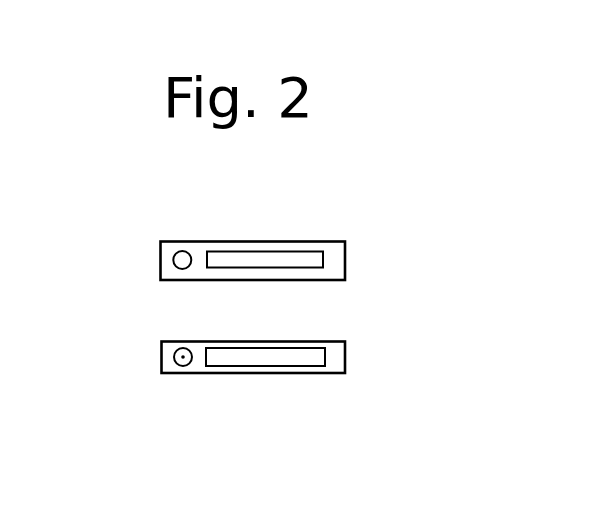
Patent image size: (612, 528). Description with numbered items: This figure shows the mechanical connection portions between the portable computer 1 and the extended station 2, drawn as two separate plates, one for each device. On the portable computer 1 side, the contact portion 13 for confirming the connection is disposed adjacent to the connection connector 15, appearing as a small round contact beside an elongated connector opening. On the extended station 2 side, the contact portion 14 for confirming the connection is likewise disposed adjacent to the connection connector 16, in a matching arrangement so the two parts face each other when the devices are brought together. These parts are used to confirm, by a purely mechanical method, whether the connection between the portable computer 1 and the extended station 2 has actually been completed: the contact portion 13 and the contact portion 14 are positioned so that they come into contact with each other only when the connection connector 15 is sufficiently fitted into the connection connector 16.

The portable computer 1 is at (193, 241).
The extended station 2 is at (333, 373).
The contact portion for confirming the connection on the portable computer side 13 is at (181, 259).
The contact portion for confirming the connection on the extended station side 14 is at (182, 359).
The connection connector on the portable computer side 15 is at (288, 256).
The connection connector on the extended station side 16 is at (297, 360).